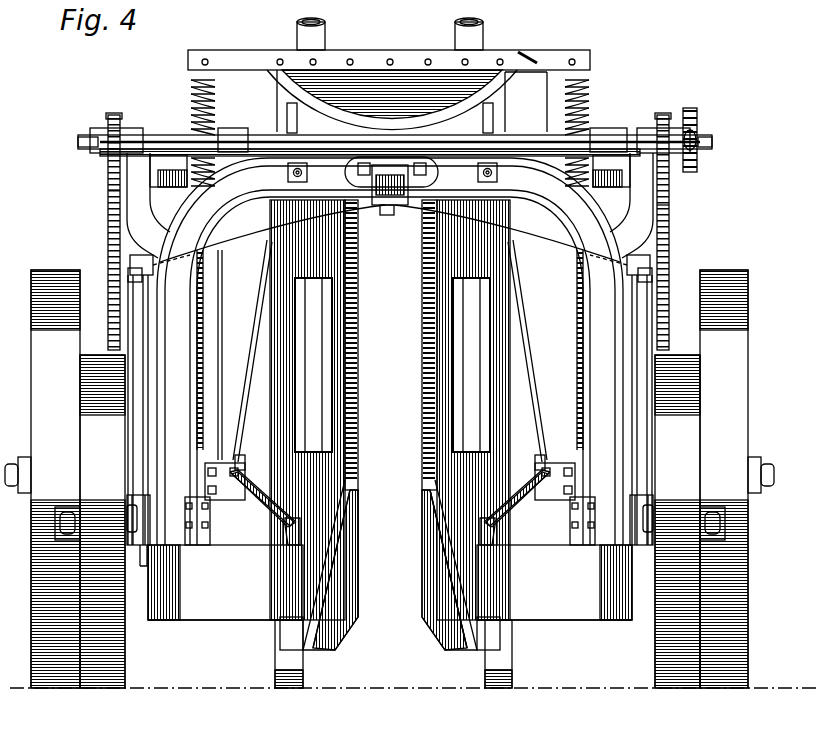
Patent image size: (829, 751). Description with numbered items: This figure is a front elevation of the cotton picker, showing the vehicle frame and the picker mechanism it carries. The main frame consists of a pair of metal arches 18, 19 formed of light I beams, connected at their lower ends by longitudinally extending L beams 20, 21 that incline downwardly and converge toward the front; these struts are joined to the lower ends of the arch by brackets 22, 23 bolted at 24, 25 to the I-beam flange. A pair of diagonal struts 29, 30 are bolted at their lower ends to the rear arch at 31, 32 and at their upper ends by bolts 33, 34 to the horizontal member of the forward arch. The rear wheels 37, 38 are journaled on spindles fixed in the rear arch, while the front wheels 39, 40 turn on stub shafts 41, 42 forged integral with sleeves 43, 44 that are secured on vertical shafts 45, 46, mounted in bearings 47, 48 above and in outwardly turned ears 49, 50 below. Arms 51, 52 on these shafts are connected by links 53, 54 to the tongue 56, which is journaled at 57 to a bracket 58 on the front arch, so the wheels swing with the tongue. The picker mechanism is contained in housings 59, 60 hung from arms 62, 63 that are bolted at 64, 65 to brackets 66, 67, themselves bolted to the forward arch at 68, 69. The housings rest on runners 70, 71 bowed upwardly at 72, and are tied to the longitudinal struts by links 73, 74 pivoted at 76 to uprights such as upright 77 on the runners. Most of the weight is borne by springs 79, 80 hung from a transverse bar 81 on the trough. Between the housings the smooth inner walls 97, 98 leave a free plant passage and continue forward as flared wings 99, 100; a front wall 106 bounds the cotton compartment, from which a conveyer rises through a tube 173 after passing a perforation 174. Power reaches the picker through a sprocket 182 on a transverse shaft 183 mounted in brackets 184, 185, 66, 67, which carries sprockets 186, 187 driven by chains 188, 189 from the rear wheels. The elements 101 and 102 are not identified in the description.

The metal arch 18 is at (172, 432).
The metal arch 19 is at (224, 426).
The longitudinally extending L beam 20 is at (262, 492).
The longitudinally extending L beam 21 is at (520, 492).
The bracket 22 is at (225, 582).
The bracket 23 is at (554, 582).
The bolt 24 is at (208, 525).
The bolt 25 is at (575, 524).
The diagonal strut 29 is at (265, 256).
The diagonal strut 30 is at (522, 270).
The bolt 31 is at (245, 462).
The bolt 32 is at (538, 462).
The bolt 33 is at (307, 172).
The bolt 34 is at (478, 172).
The rear wheel 37 is at (42, 479).
The rear wheel 38 is at (737, 479).
The front wheel 39 is at (108, 698).
The front wheel 40 is at (675, 700).
The stub shaft 41 is at (127, 519).
The stub shaft 42 is at (653, 519).
The sleeve 43 is at (127, 500).
The sleeve 44 is at (653, 500).
The vertical shaft 45 is at (145, 401).
The vertical shaft 46 is at (650, 432).
The bearing 47 is at (130, 258).
The bearing 48 is at (650, 258).
The outwardly turned ear 49 is at (137, 564).
The outwardly turned ear 50 is at (616, 582).
The arm 51 is at (128, 272).
The arm 52 is at (652, 272).
The link 53 is at (215, 350).
The link 54 is at (569, 350).
The tongue 56 is at (391, 178).
The journal 57 is at (386, 216).
The bracket 58 is at (360, 158).
The housing 59 is at (202, 620).
The housing 60 is at (592, 620).
The arm 62 is at (158, 156).
The arm 63 is at (623, 163).
The bolt 64 is at (168, 169).
The bolt 65 is at (611, 168).
The bracket 66 is at (212, 224).
The bracket 67 is at (567, 224).
The bolt 68 is at (228, 240).
The bolt 69 is at (556, 240).
The runner 70 is at (275, 676).
The runner 71 is at (512, 668).
The bowed forward end 72 is at (289, 690).
The link 73 is at (300, 526).
The link 74 is at (482, 526).
The pivot 76 is at (426, 116).
The upright 77 is at (503, 101).
The spring 79 is at (190, 88).
The spring 80 is at (588, 88).
The transverse bar 81 is at (247, 52).
The inner wall 97 is at (430, 380).
The inner wall 98 is at (362, 380).
The wing 99 is at (322, 635).
The wing 100 is at (462, 597).
The left chute wall 101 is at (360, 545).
The right chute wall 102 is at (460, 560).
The front wall 106 is at (297, 510).
The tube 173 is at (330, 300).
The perforation 174 is at (455, 418).
The sprocket 182 is at (700, 122).
The transverse shaft 183 is at (510, 140).
The bracket 184 is at (598, 128).
The bracket 185 is at (240, 128).
The sprocket 186 is at (119, 117).
The sprocket 187 is at (664, 117).
The sprocket chain 188 is at (108, 195).
The sprocket chain 189 is at (671, 205).